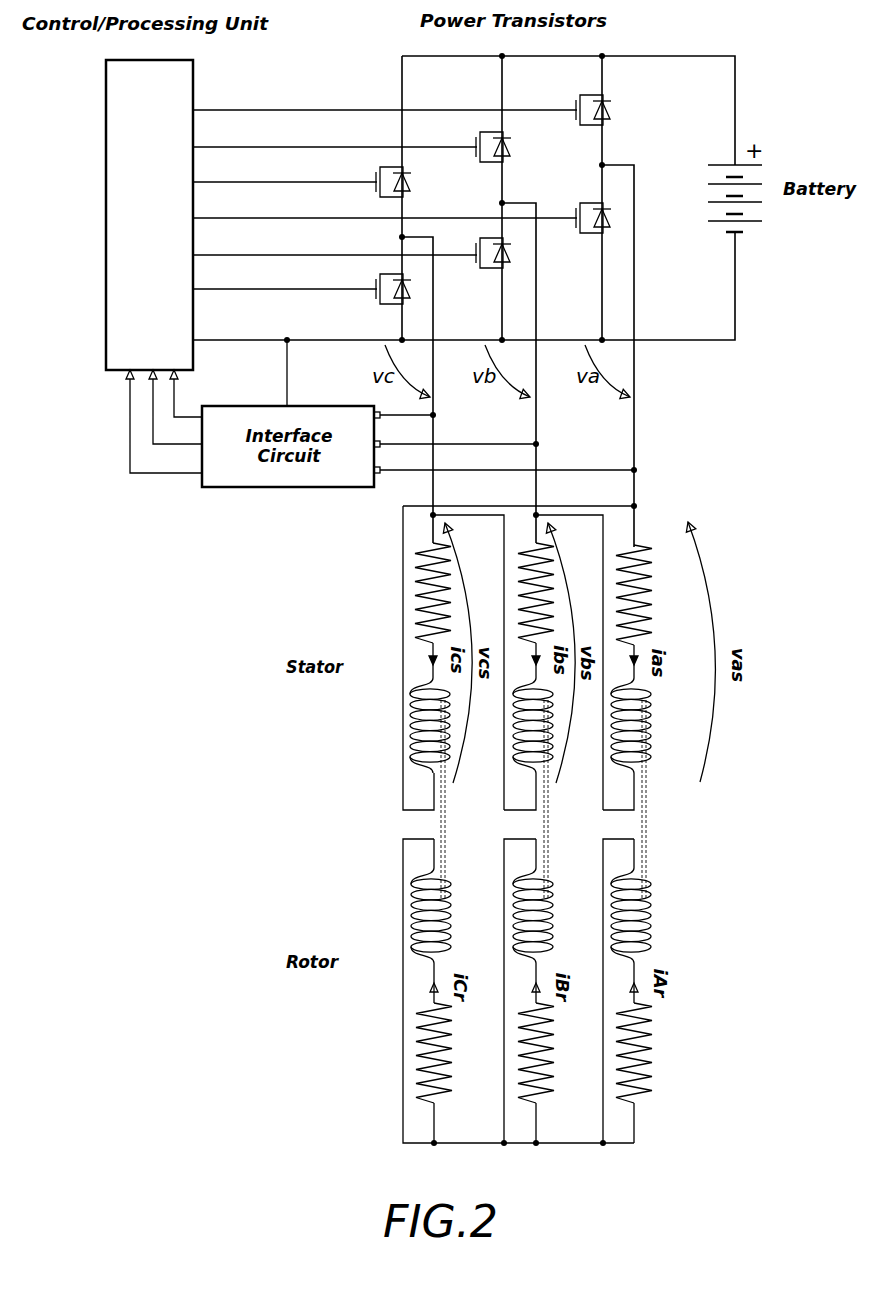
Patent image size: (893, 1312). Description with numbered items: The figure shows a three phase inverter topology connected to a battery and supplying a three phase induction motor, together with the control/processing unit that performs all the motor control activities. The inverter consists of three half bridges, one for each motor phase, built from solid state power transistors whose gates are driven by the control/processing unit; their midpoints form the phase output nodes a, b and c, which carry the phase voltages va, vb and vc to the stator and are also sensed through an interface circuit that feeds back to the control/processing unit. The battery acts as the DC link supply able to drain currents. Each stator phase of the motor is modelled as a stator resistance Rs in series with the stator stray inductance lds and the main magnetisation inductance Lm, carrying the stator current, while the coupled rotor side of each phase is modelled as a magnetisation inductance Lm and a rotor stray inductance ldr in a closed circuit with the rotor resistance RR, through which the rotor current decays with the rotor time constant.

The phase a output node a is at (604, 349).
The phase b output node b is at (502, 364).
The phase c output node c is at (404, 385).
The stator resistance Rs is at (550, 594).
The stator stray inductance lds is at (550, 725).
The magnetisation inductance Lm is at (550, 725).
The rotor stray inductance ldr is at (550, 915).
The rotor resistance RR is at (550, 1053).